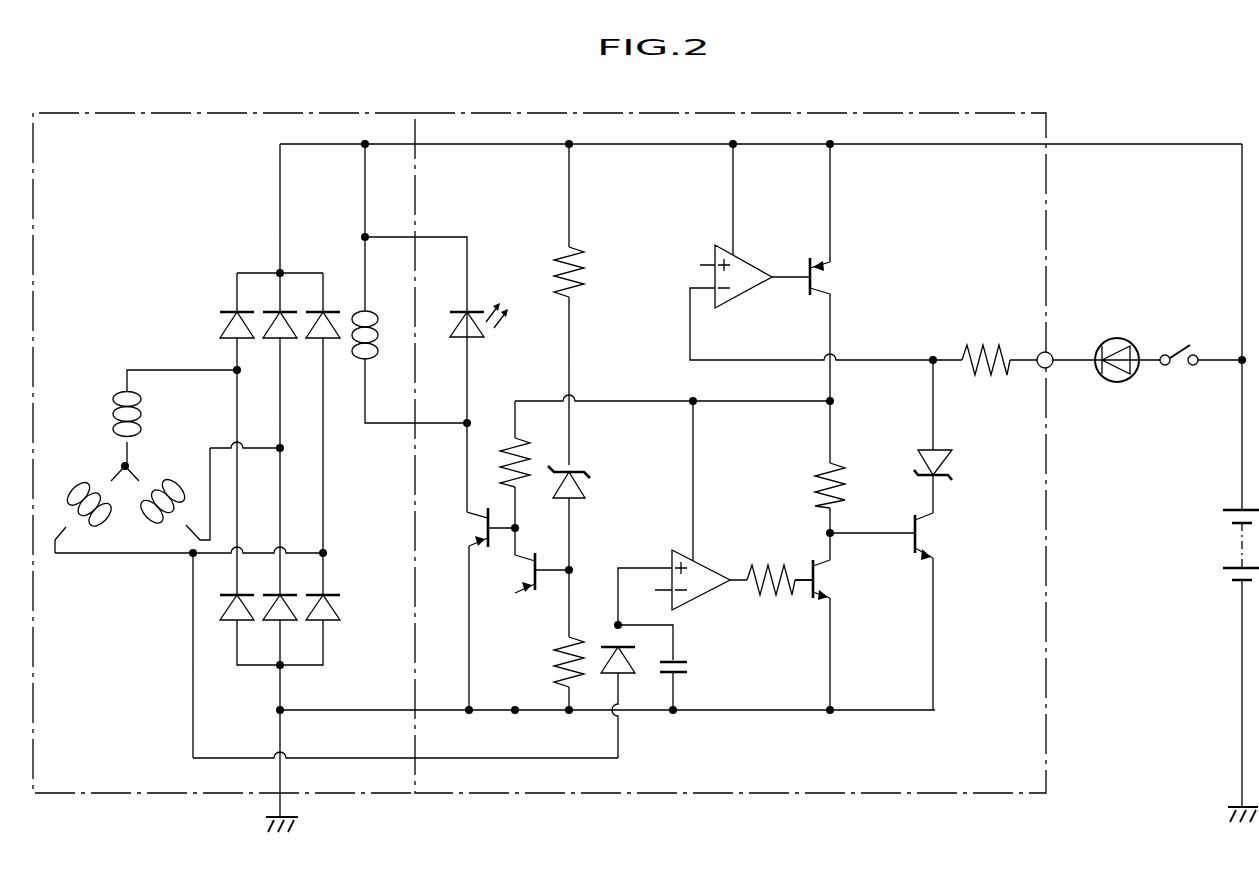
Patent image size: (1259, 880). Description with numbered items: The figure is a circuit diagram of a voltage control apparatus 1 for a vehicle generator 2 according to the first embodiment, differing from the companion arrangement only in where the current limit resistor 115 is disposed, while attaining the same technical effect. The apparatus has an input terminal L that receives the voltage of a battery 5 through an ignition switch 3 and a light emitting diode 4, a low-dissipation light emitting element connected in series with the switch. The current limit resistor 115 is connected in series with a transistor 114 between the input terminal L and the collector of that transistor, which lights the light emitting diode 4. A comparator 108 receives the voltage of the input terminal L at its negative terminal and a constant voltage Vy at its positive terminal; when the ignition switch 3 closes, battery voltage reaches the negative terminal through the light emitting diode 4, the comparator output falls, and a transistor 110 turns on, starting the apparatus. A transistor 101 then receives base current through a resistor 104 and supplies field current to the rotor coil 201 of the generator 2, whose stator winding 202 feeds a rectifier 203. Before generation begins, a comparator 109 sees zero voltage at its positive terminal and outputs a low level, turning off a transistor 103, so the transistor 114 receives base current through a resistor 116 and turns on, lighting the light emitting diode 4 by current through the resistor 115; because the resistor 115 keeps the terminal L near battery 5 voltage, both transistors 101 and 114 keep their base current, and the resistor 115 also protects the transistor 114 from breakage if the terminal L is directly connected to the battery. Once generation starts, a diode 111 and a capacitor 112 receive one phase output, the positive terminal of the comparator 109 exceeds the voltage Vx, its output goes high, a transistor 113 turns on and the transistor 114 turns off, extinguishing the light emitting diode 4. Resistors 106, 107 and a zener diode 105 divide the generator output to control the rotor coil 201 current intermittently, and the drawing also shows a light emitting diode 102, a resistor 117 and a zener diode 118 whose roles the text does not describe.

The voltage control apparatus 1 is at (527, 797).
The vehicle generator 2 is at (113, 800).
The ignition switch 3 is at (1186, 343).
The light emitting diode 4 is at (1112, 340).
The battery 5 is at (1218, 522).
The transistor 101 is at (481, 552).
The light emitting diode 102 is at (522, 262).
The transistor 103 is at (541, 588).
The resistor 104 is at (523, 427).
The zener diode 105 is at (582, 465).
The resistor 106 is at (590, 265).
The resistor 107 is at (580, 632).
The comparator 108 is at (756, 265).
The comparator 109 is at (712, 596).
The transistor 110 is at (821, 273).
The diode 111 is at (634, 678).
The capacitor 112 is at (690, 668).
The transistor 113 is at (822, 582).
The transistor 114 is at (925, 535).
The current limit resistor 115 is at (980, 348).
The resistor 116 is at (846, 468).
The resistor 117 is at (785, 500).
The zener diode 118 is at (955, 462).
The rotor coil 201 is at (360, 305).
The stator coil 202 is at (122, 465).
The rectifier 203 is at (250, 350).
The input terminal L is at (1050, 368).